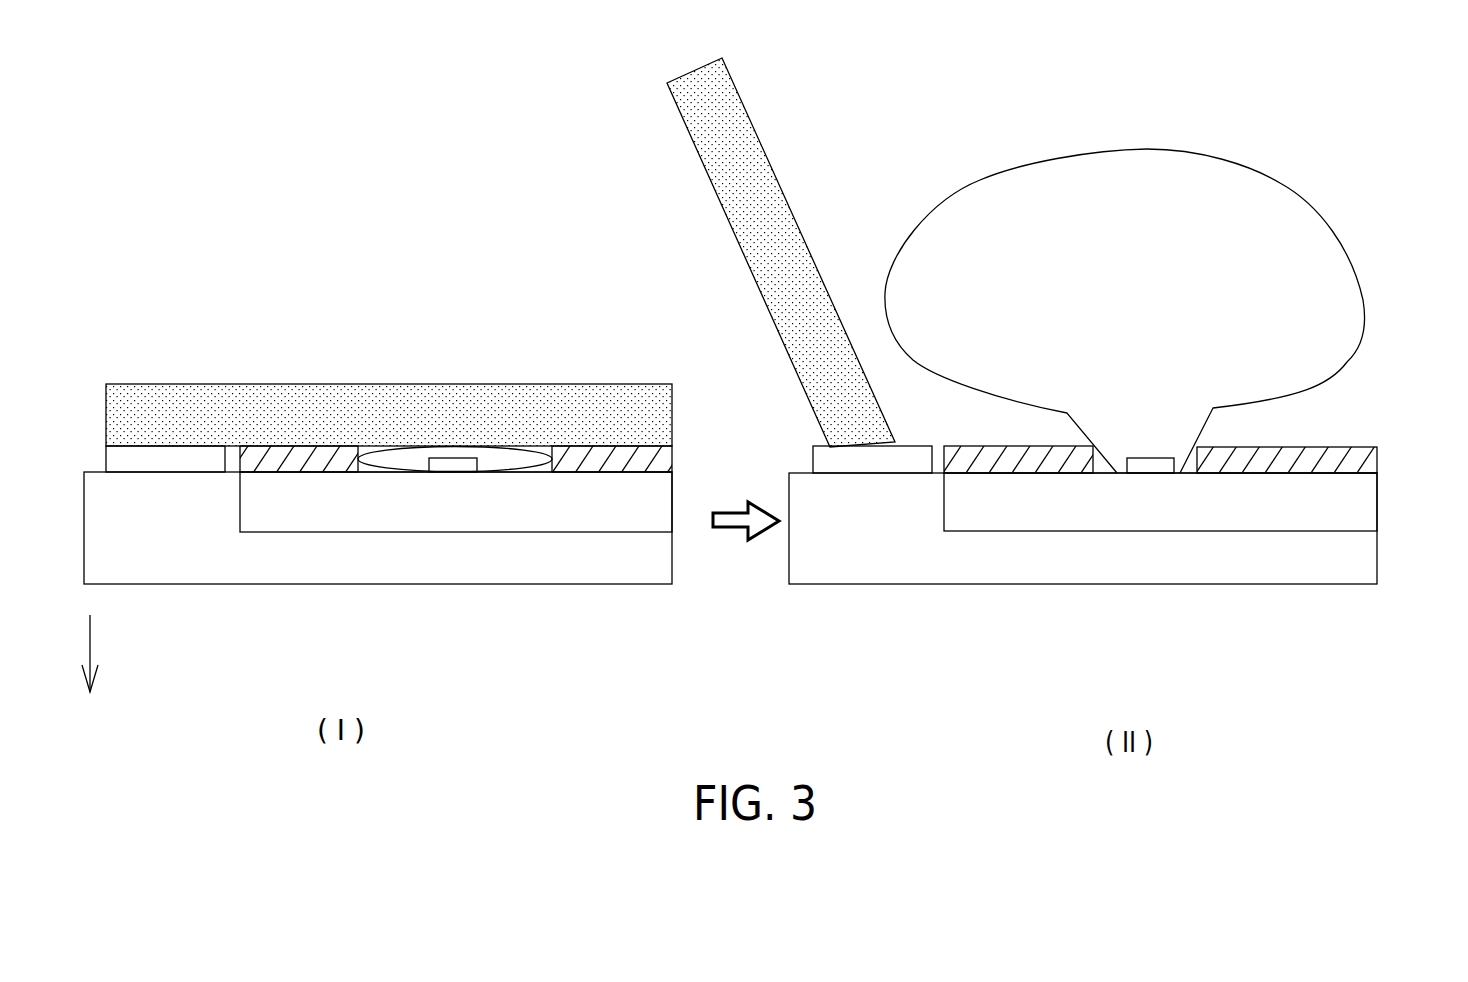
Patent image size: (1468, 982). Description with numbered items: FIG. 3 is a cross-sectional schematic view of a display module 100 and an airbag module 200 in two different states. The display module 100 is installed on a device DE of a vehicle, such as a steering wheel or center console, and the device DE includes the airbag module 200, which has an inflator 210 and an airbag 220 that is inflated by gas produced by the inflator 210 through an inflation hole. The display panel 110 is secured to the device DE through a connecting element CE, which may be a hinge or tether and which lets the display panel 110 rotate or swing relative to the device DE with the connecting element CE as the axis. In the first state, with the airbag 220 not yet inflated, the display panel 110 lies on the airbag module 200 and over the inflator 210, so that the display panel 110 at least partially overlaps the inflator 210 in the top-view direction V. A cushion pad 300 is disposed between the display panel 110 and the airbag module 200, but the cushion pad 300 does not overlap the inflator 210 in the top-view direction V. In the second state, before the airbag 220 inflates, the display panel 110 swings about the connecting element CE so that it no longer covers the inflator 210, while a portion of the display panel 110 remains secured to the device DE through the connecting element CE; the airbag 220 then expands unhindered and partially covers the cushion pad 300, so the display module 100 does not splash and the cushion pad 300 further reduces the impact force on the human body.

The display module 100 is at (500, 252).
The display panel 110 is at (305, 403).
The airbag module 200 is at (678, 530).
The inflator 210 is at (447, 465).
The airbag 220 is at (523, 458).
The cushion pad 300 is at (615, 460).
The connecting element CE is at (158, 460).
The device DE is at (437, 555).
The top-view direction V is at (103, 653).